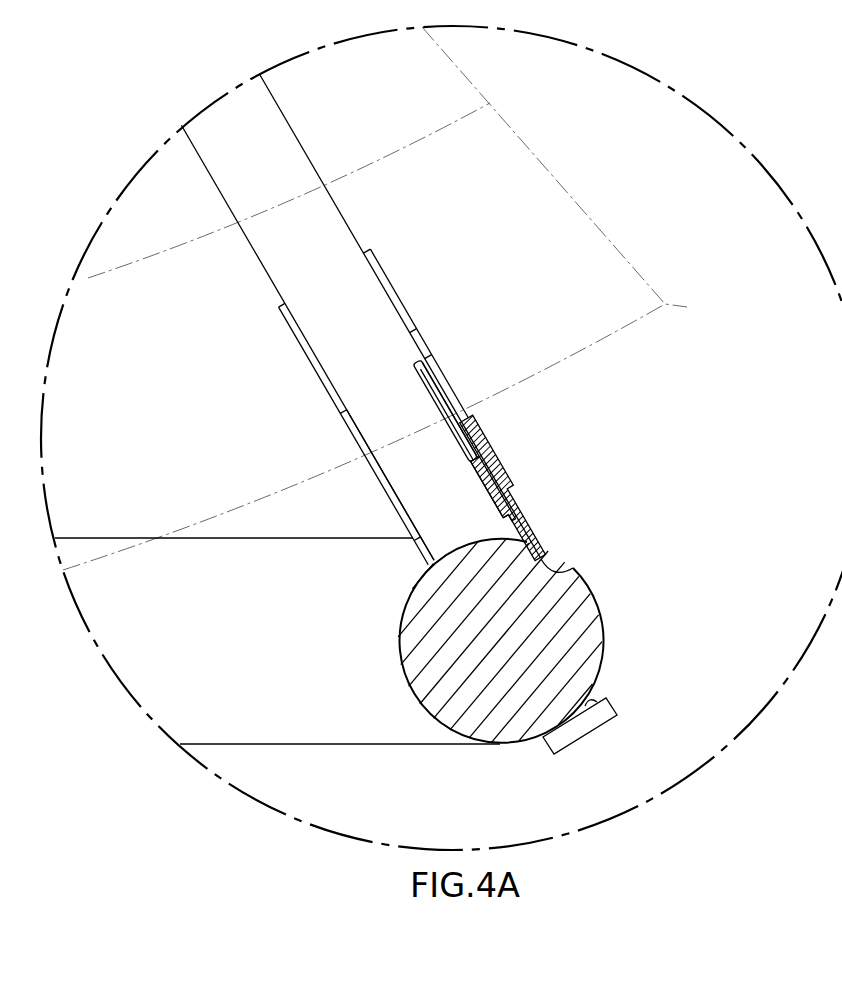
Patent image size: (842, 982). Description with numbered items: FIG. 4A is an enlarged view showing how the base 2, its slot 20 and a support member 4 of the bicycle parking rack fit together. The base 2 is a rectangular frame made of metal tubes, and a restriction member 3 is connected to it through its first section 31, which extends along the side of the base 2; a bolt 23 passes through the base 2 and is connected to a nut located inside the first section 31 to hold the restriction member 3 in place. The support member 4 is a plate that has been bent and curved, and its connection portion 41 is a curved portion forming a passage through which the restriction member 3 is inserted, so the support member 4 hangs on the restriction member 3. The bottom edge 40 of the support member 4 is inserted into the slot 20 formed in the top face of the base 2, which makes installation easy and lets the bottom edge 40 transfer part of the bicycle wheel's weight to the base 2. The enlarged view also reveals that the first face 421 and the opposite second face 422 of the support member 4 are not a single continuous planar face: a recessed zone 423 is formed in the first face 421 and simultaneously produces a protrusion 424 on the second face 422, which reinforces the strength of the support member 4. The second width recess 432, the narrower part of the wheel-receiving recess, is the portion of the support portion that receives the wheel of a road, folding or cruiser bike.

The base 2 is at (598, 642).
The slot 20 is at (533, 531).
The bolt 23 is at (595, 733).
The restriction member 3 is at (338, 206).
The first section 31 is at (338, 410).
The support member 4 is at (396, 416).
The bottom edge 40 is at (549, 573).
The connection portion 41 is at (293, 343).
The first face 421 is at (452, 405).
The second face 422 is at (460, 432).
The recessed zone 423 is at (495, 475).
The protrusion 424 is at (465, 478).
The second width recess 432 is at (450, 385).